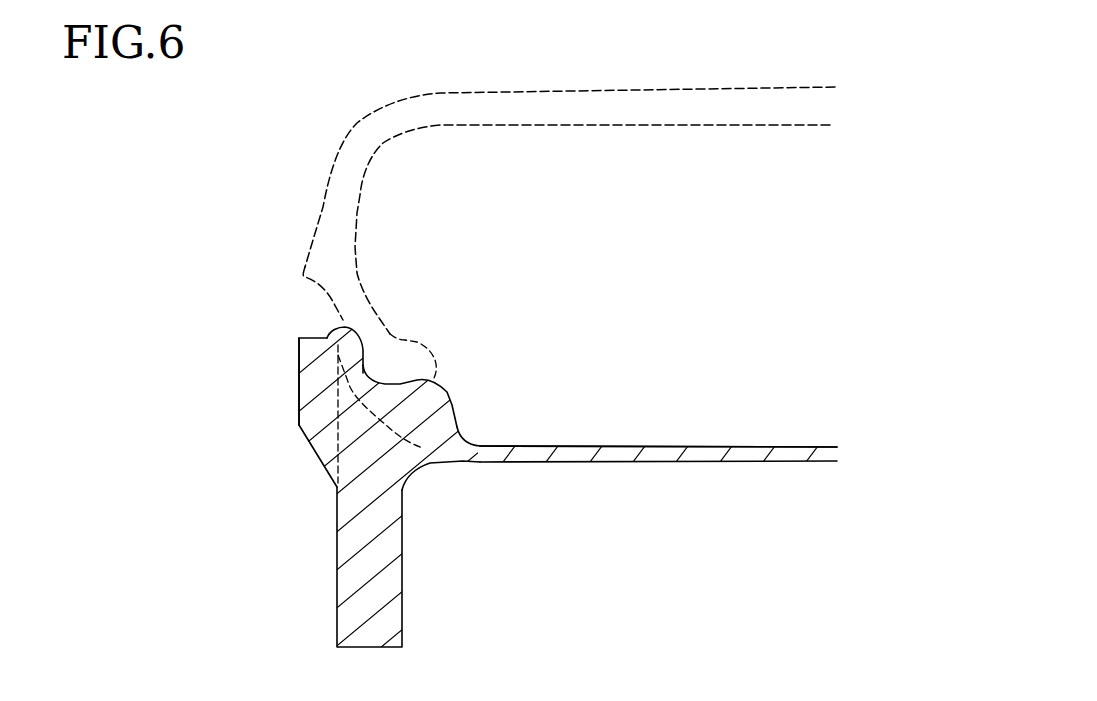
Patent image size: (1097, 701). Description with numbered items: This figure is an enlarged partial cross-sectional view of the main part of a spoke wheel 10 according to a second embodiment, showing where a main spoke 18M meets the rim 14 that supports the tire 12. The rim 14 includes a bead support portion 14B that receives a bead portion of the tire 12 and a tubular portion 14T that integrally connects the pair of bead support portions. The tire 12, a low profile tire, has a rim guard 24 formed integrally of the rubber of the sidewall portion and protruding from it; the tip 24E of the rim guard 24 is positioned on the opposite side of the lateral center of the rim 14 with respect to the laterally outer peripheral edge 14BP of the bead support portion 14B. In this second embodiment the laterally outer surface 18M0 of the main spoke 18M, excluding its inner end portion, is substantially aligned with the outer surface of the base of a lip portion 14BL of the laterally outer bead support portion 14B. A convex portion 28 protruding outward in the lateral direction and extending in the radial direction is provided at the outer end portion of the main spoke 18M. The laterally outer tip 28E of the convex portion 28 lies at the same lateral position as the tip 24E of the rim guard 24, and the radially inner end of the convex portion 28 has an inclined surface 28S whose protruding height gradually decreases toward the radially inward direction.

The spoke wheel 10 is at (492, 411).
The tire 12 is at (565, 118).
The rim 14 is at (598, 466).
The tubular portion 14T is at (738, 467).
The bead support portion 14B is at (383, 397).
The laterally outer peripheral edge 14BP is at (329, 333).
The lip portion 14BL is at (363, 340).
The main spoke 18M is at (407, 583).
The laterally outer surface 18M0 is at (337, 597).
The rim guard 24 is at (305, 276).
The tip of rim guard 24E is at (300, 275).
The convex portion 28 is at (298, 405).
The laterally outer tip of convex portion 28E is at (298, 360).
The inclined surface 28S is at (313, 450).